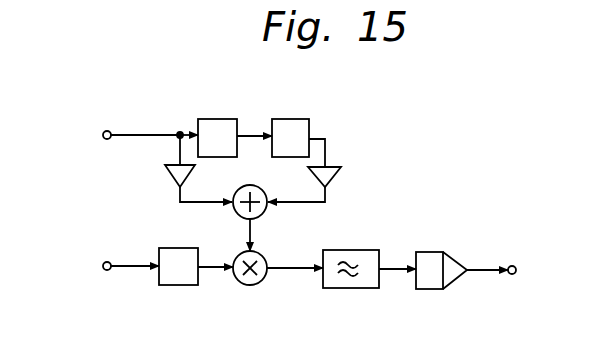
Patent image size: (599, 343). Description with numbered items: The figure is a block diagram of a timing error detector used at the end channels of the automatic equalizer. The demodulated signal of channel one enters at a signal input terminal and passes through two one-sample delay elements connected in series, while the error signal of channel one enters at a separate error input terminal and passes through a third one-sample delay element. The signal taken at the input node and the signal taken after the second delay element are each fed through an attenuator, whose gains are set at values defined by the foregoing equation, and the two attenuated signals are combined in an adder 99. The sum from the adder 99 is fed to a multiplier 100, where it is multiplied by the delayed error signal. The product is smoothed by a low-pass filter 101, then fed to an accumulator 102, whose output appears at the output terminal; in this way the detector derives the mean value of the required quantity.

The adder 99 is at (262, 216).
The multiplier 100 is at (262, 283).
The low-pass filter 101 is at (356, 251).
The accumulator 102 is at (430, 253).